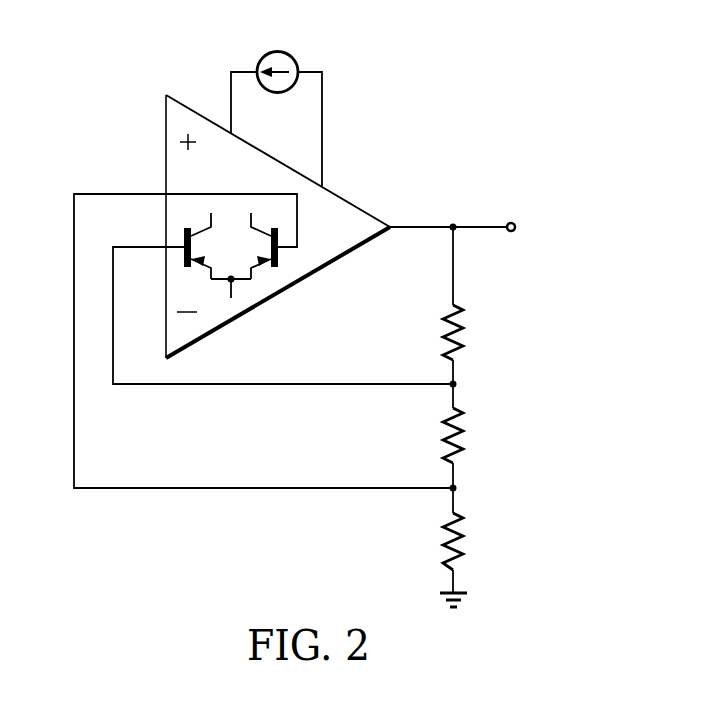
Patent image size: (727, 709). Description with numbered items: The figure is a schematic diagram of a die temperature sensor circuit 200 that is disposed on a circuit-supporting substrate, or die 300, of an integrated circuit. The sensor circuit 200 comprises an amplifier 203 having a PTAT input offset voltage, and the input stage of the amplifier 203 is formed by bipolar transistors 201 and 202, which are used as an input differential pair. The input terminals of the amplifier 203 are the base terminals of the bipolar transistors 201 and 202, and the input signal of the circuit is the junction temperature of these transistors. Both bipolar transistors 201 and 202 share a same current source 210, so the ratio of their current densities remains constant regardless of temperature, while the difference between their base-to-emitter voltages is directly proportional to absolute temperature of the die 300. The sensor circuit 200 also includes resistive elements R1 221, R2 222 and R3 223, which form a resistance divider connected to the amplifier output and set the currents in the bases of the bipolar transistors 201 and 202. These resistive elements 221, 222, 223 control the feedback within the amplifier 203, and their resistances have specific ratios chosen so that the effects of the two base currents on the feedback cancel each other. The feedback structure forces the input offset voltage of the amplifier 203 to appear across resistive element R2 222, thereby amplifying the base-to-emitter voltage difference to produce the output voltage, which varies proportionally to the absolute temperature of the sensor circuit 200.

The die temperature sensor circuit 200 is at (300, 593).
The bipolar transistor 201 is at (277, 230).
The bipolar transistor 202 is at (185, 230).
The amplifier 203 is at (166, 133).
The current source 210 is at (287, 53).
The resistive element R1 221 is at (463, 533).
The resistive element R2 222 is at (463, 428).
The resistive element R3 223 is at (463, 323).
The die 300 is at (379, 593).